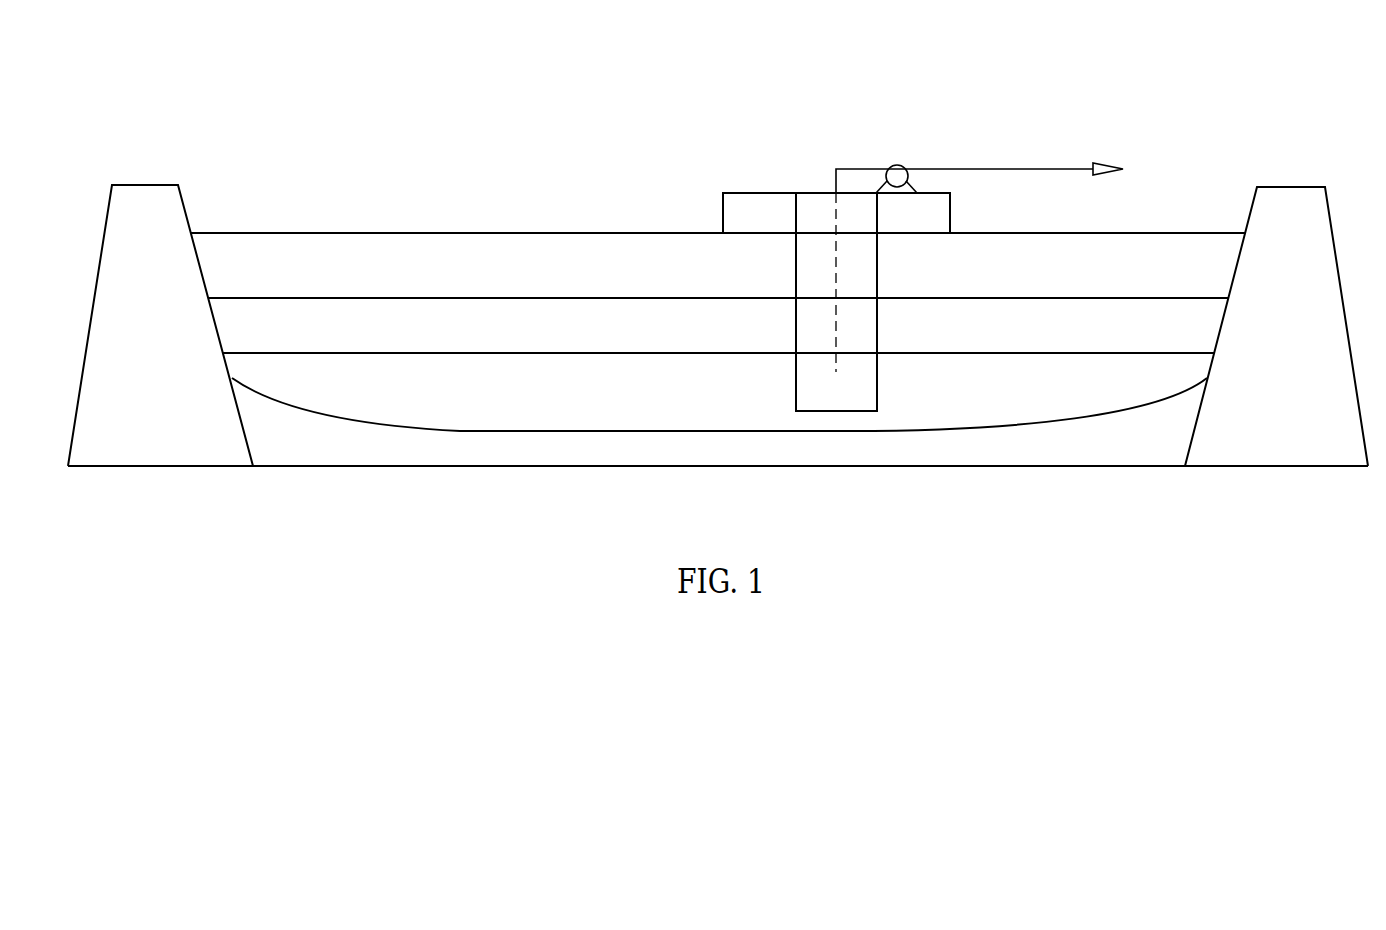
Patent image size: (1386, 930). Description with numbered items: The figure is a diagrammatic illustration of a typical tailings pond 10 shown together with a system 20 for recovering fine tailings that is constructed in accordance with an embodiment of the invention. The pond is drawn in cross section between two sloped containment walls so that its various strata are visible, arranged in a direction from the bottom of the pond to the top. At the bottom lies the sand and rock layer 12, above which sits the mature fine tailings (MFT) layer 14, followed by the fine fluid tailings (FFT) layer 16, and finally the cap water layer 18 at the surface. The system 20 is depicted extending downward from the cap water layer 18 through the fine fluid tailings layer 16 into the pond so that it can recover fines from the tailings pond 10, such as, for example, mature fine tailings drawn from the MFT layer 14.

The tailings pond 10 is at (145, 185).
The sand and rock layer 12 is at (366, 453).
The mature fine tailings (MFT) layer 14 is at (460, 415).
The fine fluid tailings (FFT) layer 16 is at (327, 330).
The cap water layer 18 is at (346, 250).
The system for recovering fines 20 is at (773, 190).